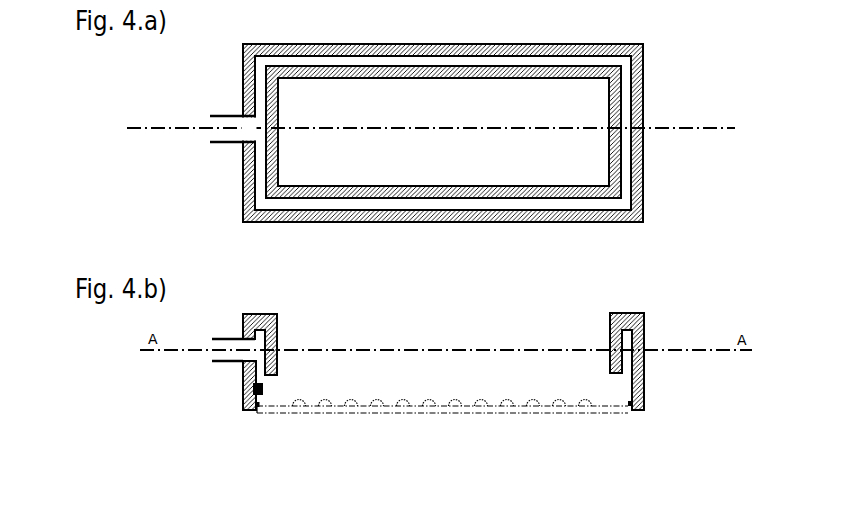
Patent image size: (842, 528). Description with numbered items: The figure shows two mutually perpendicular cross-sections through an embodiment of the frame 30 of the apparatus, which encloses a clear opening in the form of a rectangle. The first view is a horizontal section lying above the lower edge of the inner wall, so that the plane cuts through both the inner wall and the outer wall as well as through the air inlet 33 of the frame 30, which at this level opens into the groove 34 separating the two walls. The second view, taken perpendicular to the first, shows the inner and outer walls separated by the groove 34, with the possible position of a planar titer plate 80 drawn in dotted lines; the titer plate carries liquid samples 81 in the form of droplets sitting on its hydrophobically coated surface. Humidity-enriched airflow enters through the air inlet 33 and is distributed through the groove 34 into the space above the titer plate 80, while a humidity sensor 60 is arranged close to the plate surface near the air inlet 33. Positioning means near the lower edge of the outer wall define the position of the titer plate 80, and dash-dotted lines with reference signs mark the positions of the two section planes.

The frame 30 is at (429, 28).
The air inlet 33 is at (231, 325).
The groove 34 is at (624, 386).
The humidity sensor 60 is at (253, 388).
The titer plate 80 is at (282, 414).
The liquid samples 81 is at (325, 407).